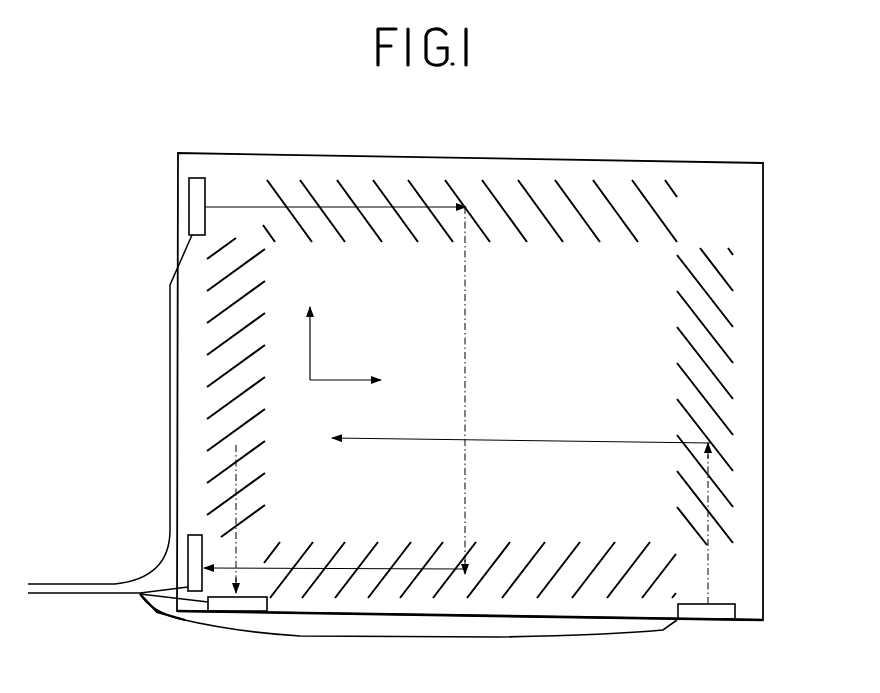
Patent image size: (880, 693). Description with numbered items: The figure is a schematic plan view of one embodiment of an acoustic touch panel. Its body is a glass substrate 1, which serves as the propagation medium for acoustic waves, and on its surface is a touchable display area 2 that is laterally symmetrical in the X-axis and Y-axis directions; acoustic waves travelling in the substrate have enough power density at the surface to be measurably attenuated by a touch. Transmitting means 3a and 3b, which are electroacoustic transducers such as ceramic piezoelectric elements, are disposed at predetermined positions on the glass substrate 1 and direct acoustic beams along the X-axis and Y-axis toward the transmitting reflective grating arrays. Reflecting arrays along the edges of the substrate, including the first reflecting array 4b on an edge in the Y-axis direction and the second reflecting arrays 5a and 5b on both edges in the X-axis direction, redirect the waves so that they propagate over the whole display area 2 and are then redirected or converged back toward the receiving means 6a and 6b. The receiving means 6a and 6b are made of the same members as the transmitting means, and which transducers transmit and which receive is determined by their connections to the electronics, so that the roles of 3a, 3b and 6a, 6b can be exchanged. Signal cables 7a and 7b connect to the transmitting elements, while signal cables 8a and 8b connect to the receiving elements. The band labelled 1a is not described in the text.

The glass substrate 1 is at (634, 478).
The upper electrode (top side) 1a is at (416, 188).
The display area 2 is at (561, 377).
The transmitting means 3a is at (189, 205).
The transmitting means 3b is at (700, 614).
The first reflecting array 4b is at (404, 547).
The second reflecting array 5a is at (727, 387).
The second reflecting array 5b is at (257, 443).
The receiving means 6a is at (195, 535).
The receiving means 6b is at (260, 614).
The signal cable 7a is at (170, 425).
The signal cable 7b is at (233, 628).
The signal cable 8a is at (163, 578).
The signal cable 8b is at (152, 599).